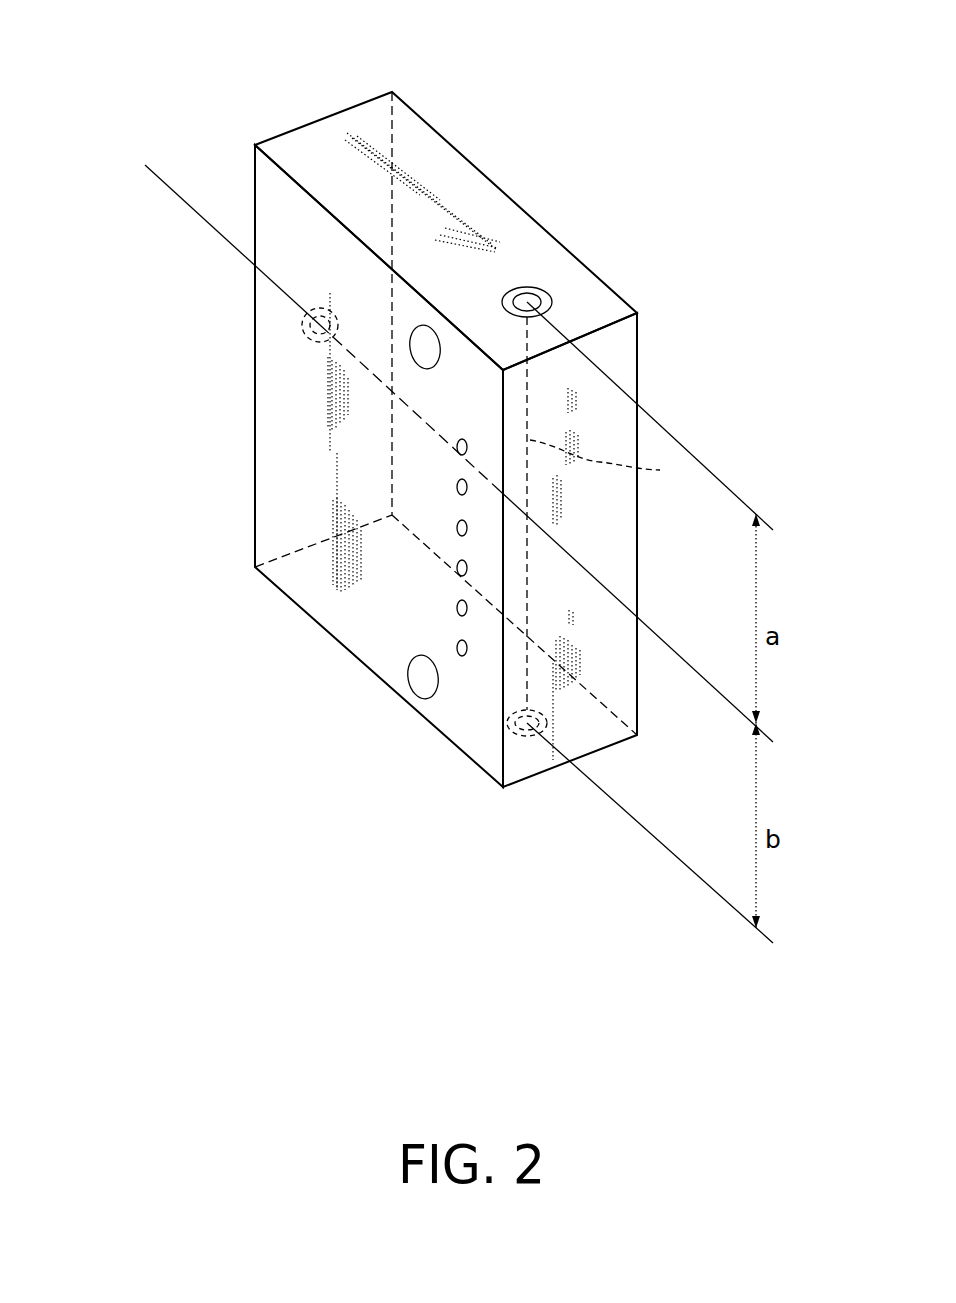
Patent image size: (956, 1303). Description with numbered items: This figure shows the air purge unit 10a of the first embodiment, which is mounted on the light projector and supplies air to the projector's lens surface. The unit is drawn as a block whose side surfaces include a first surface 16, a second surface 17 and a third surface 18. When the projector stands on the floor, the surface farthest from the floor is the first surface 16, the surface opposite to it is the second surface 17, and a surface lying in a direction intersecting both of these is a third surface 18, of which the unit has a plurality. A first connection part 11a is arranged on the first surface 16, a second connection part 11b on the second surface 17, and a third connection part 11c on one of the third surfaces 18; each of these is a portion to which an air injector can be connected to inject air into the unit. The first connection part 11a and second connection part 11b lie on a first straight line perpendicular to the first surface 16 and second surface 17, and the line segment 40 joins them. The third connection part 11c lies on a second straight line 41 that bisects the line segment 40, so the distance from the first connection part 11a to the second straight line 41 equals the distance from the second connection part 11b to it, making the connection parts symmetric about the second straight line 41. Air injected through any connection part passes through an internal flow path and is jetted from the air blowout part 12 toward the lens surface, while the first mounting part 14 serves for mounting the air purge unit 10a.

The air purge unit 10a is at (436, 403).
The first connection part 11a is at (527, 302).
The second connection part 11b is at (545, 742).
The third connection part 11c is at (302, 330).
The air blowout part 12 is at (457, 526).
The first mounting part 14 is at (413, 336).
The first surface 16 is at (478, 200).
The second surface 17 is at (387, 656).
The third surface 18 is at (530, 245).
The line segment 40 is at (612, 464).
The second straight line 41 is at (165, 188).